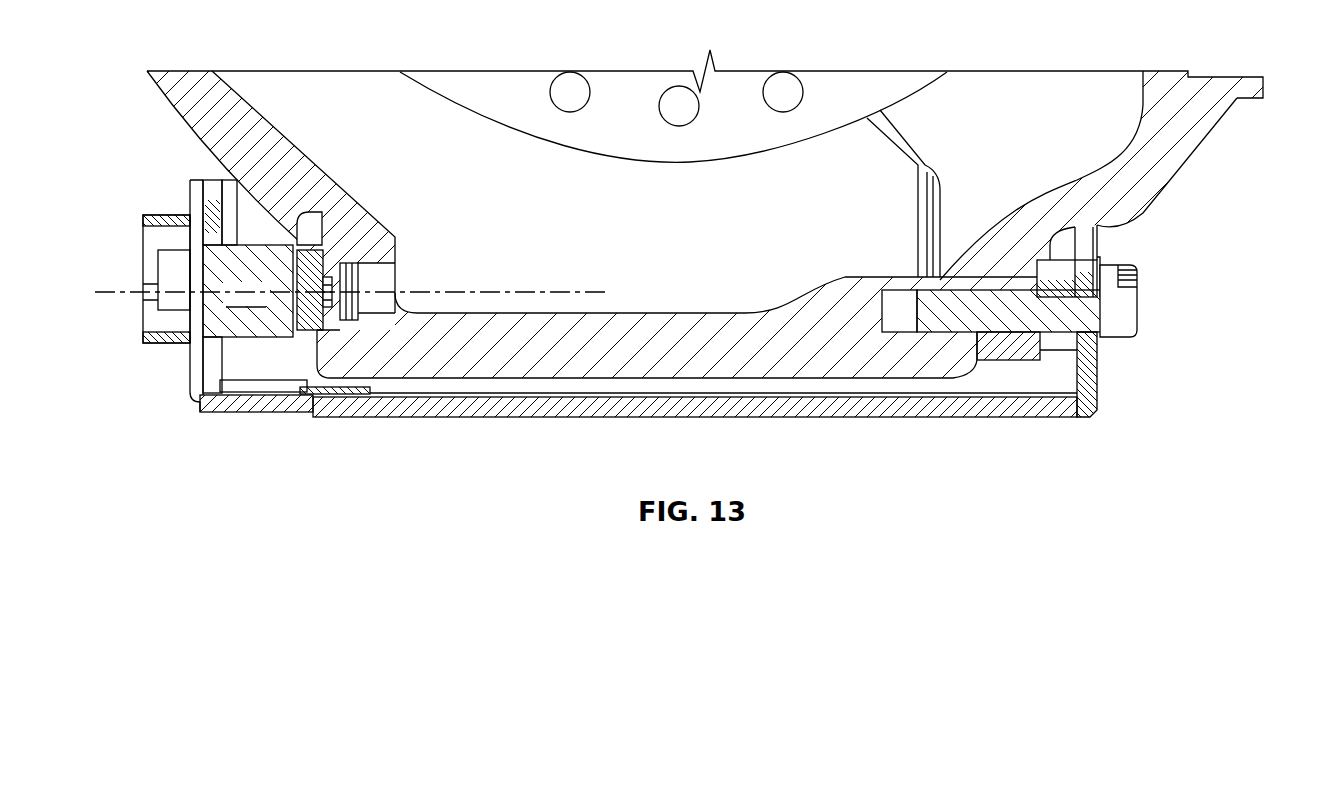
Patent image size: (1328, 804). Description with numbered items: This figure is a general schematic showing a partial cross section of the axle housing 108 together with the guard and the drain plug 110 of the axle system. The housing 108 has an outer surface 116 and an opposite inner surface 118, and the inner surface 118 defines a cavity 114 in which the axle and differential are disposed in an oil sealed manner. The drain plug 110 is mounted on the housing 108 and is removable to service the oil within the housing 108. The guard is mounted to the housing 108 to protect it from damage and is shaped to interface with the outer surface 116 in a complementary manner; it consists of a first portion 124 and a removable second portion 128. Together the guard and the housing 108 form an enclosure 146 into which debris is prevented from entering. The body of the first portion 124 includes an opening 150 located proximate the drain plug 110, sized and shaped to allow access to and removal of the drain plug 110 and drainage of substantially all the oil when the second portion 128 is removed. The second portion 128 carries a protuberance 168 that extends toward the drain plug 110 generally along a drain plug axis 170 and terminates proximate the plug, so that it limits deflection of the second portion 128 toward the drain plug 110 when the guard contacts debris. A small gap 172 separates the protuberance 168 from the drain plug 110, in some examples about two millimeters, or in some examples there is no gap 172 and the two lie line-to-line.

The axle housing 108 is at (236, 160).
The drain plug 110 is at (684, 326).
The cavity 114 is at (884, 84).
The outer surface 116 is at (153, 90).
The inner surface 118 is at (245, 105).
The first portion 124 is at (250, 401).
The second portion 128 is at (196, 384).
The enclosure 146 is at (987, 384).
The opening 150 is at (240, 232).
The protuberance 168 is at (226, 307).
The drain plug axis 170 is at (535, 290).
The gap 172 is at (366, 288).